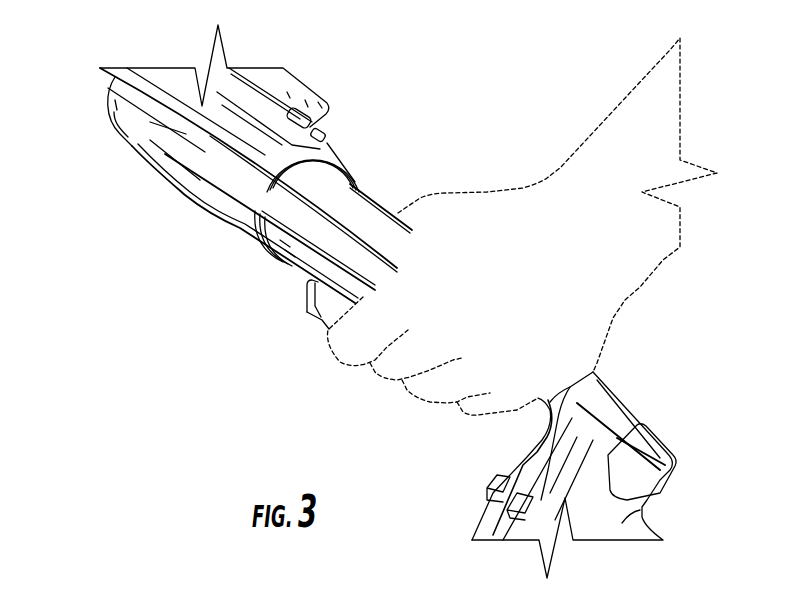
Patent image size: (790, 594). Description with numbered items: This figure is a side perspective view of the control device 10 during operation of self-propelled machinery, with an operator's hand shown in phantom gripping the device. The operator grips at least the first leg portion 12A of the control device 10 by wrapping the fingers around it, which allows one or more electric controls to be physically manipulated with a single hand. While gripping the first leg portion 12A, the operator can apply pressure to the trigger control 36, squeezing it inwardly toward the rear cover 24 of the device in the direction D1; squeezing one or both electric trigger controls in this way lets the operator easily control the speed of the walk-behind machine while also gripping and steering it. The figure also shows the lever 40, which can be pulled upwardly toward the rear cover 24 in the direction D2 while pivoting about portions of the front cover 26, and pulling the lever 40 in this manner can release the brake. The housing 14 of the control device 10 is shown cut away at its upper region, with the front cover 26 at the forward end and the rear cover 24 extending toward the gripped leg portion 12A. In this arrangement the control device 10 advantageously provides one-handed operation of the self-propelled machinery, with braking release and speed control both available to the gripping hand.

The control device 10 is at (96, 101).
The front cover 26 is at (132, 140).
The lever 40 is at (184, 135).
The housing 14 is at (178, 208).
The rear cover 24 is at (372, 212).
The direction D2 is at (219, 170).
The direction D1 is at (303, 322).
The trigger control 36 is at (313, 320).
The first leg portion 12A is at (494, 427).